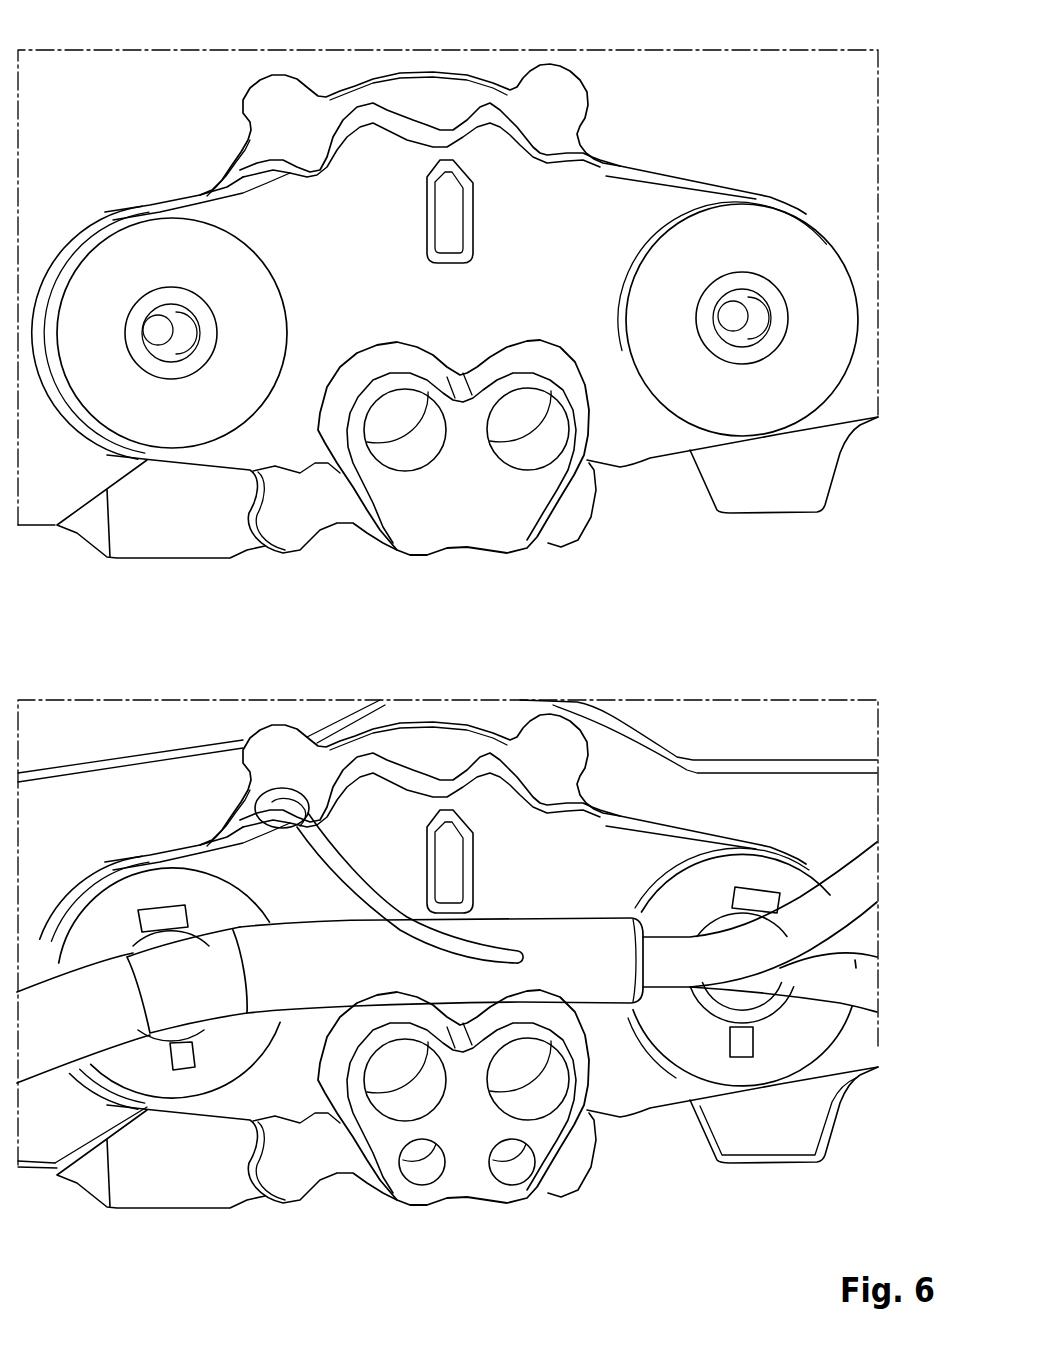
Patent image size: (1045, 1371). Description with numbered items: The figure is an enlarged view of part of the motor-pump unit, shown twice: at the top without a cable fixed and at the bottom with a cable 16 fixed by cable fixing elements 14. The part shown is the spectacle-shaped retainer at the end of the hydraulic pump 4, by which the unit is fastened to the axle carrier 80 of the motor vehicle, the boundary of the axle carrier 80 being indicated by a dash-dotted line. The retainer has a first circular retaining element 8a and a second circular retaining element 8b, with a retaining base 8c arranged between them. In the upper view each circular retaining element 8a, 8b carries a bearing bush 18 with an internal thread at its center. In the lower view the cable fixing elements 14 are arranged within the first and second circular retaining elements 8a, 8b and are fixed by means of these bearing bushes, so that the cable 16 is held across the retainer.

The hydraulic pump 4 is at (557, 113).
The first circular retaining element 8a is at (787, 413).
The second circular retaining element 8b is at (163, 235).
The retaining base 8c is at (425, 145).
The cable fixing element 14 is at (765, 903).
The cable 16 is at (573, 937).
The bearing bush 18 is at (160, 332).
The axle carrier 80 is at (838, 106).